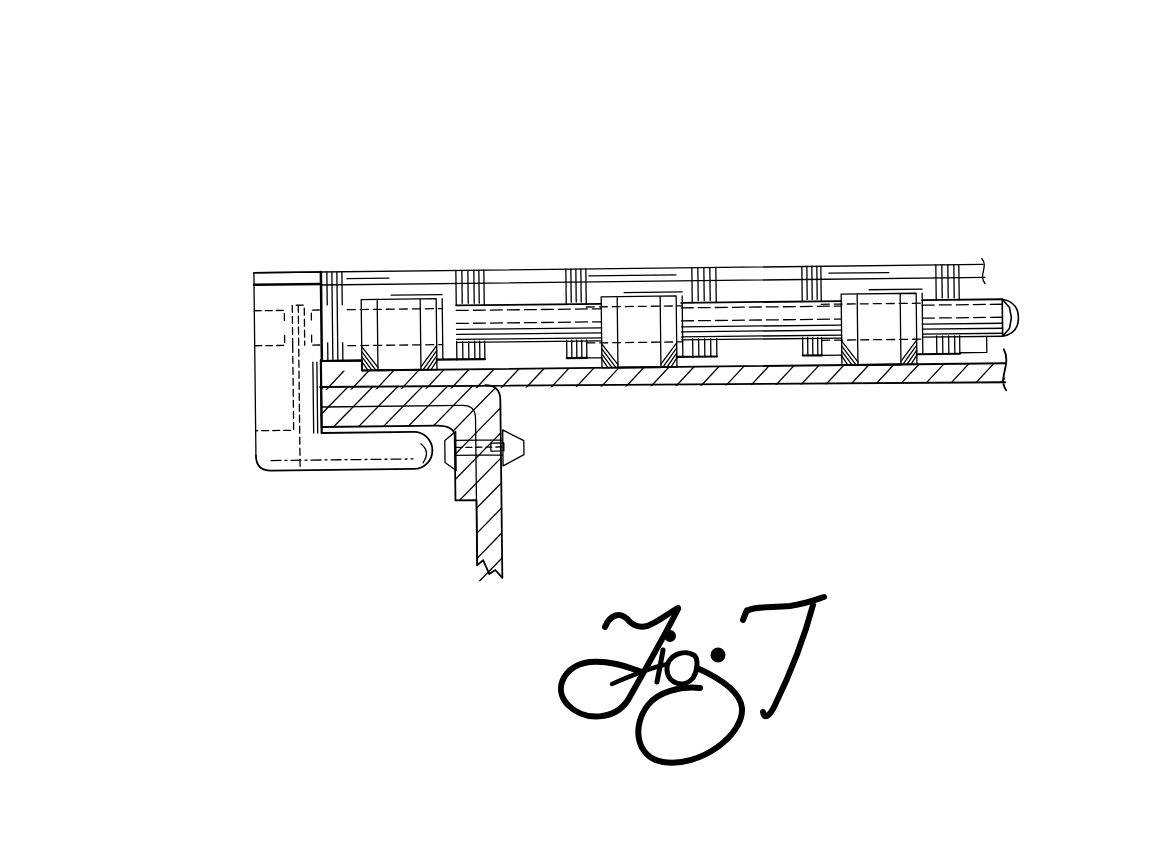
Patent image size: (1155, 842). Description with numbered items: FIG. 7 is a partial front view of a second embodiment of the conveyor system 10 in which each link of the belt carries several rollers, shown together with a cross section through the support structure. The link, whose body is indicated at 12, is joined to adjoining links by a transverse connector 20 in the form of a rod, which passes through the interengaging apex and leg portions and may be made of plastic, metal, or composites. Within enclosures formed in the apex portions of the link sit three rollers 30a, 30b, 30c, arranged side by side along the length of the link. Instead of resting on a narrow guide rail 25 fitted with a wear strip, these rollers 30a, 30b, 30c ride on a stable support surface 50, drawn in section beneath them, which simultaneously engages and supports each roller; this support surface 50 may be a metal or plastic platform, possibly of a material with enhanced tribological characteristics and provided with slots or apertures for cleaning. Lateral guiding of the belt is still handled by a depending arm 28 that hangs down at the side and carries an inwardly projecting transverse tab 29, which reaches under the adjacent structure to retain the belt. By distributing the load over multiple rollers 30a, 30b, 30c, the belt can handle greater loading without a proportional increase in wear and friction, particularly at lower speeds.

The system 10 is at (757, 195).
The housing 12 is at (777, 268).
The transverse connector 20 is at (1000, 312).
The guide rail 25 is at (493, 538).
The depending arm 28 is at (267, 384).
The transverse tab 29 is at (366, 452).
The roller 30a is at (408, 328).
The roller 30b is at (643, 318).
The roller 30c is at (875, 312).
The support surface 50 is at (859, 385).